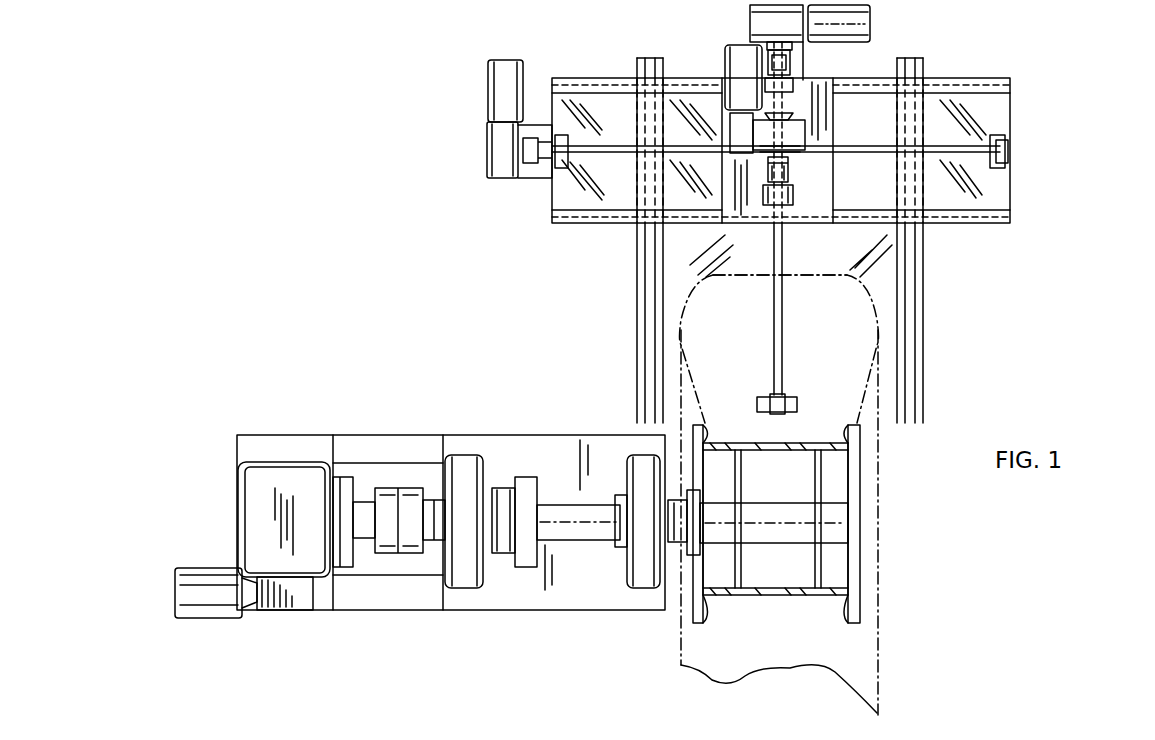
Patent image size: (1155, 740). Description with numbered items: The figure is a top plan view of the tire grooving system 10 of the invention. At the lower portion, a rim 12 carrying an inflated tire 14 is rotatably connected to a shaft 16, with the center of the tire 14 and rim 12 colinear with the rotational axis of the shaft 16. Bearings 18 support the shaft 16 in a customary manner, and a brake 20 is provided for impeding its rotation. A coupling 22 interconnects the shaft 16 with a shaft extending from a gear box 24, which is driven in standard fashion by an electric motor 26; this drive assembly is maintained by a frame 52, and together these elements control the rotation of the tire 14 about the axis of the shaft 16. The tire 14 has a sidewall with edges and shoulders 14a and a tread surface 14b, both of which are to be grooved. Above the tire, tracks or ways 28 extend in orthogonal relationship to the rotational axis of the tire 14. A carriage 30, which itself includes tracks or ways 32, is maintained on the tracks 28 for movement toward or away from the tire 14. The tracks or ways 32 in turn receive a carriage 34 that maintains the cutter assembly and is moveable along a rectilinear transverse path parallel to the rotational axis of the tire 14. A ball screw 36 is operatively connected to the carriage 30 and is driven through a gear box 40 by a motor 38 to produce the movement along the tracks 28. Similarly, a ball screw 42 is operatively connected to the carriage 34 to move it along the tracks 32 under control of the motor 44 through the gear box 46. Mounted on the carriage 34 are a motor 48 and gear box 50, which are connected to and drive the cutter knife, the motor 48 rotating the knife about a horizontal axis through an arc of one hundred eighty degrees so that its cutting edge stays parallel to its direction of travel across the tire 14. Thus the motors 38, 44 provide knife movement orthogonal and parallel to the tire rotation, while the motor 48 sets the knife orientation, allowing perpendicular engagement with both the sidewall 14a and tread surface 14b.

The tire grooving system 10 is at (1028, 340).
The rim 12 is at (773, 598).
The tire 14 is at (857, 410).
The sidewall 14a is at (699, 285).
The tread surface 14b is at (775, 283).
The shaft 16 is at (587, 486).
The bearings 18 is at (482, 565).
The brake 20 is at (500, 487).
The coupling 22 is at (410, 555).
The gear box 24 is at (245, 527).
The electric motor 26 is at (185, 608).
The tracks or ways 28 is at (637, 335).
The carriage 30 is at (1010, 178).
The tracks or ways 32 is at (948, 80).
The carriage 34 is at (822, 208).
The ball screw 36 is at (782, 270).
The motor 38 is at (870, 27).
The gear box 40 is at (758, 46).
The ball screw 42 is at (838, 148).
The motor 44 is at (488, 90).
The gear box 46 is at (488, 156).
The motor 48 is at (725, 42).
The gear box 50 is at (790, 150).
The frame 52 is at (527, 437).